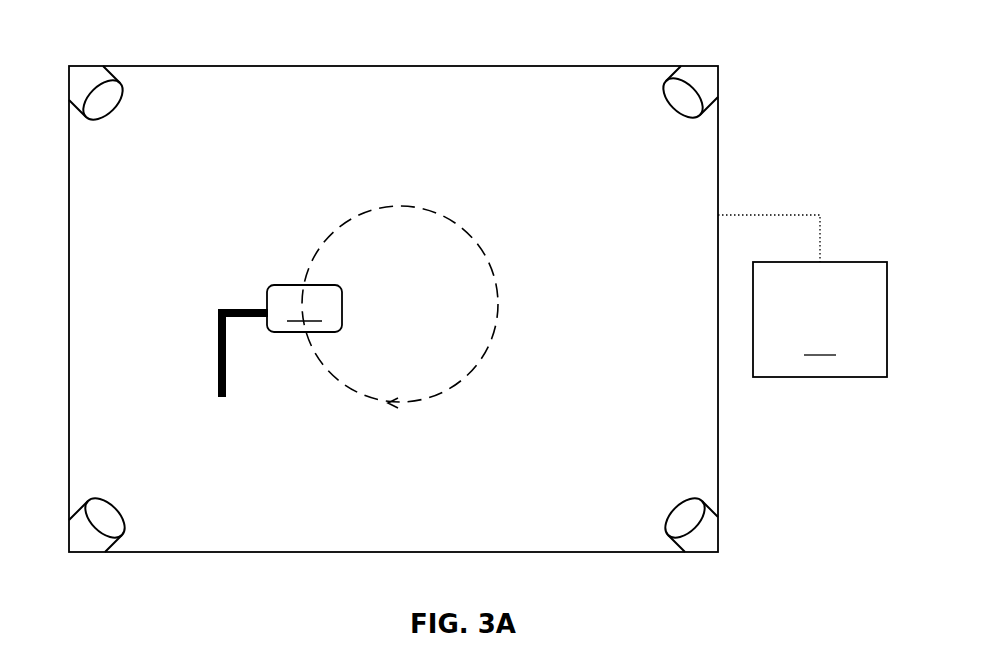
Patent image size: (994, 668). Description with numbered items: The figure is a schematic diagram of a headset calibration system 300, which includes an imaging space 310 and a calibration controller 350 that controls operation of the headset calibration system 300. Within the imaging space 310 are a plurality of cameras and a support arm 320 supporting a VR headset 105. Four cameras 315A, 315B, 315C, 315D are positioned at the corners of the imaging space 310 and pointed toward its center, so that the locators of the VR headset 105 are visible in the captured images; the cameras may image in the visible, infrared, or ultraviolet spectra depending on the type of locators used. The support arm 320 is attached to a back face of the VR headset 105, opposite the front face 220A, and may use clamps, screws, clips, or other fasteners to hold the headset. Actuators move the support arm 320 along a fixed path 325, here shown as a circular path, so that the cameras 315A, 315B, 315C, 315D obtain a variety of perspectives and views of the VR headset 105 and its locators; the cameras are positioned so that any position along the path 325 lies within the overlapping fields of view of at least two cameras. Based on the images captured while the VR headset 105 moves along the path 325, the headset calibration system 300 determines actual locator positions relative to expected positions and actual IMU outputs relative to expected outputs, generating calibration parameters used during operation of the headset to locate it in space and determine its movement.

The headset calibration system 300 is at (790, 58).
The imaging space 310 is at (385, 64).
The camera 315A is at (128, 104).
The camera 315B is at (661, 106).
The camera 315C is at (128, 510).
The camera 315D is at (658, 507).
The support arm 320 is at (252, 310).
The VR headset 105 is at (304, 308).
The front face 220A is at (348, 312).
The fixed path 325 is at (469, 380).
The calibration controller 350 is at (802, 296).